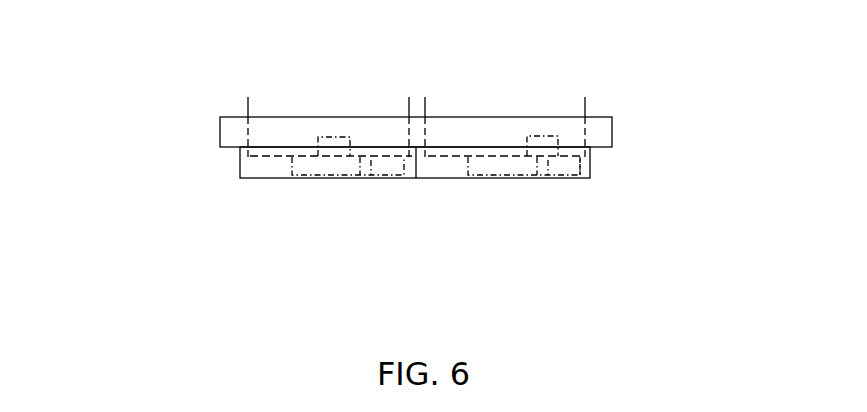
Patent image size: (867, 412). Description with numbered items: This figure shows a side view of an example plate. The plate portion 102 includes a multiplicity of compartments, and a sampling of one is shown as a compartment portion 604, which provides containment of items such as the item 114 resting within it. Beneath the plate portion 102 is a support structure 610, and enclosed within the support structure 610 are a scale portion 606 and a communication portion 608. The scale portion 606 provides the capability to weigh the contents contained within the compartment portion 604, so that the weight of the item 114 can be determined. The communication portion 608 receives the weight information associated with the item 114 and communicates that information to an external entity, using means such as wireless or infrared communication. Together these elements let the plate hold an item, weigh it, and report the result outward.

The plate portion 102 is at (220, 127).
The item 114 is at (538, 134).
The compartment portion 604 is at (587, 108).
The scale portion 606 is at (495, 179).
The communication portion 608 is at (570, 179).
The support structure 610 is at (590, 162).